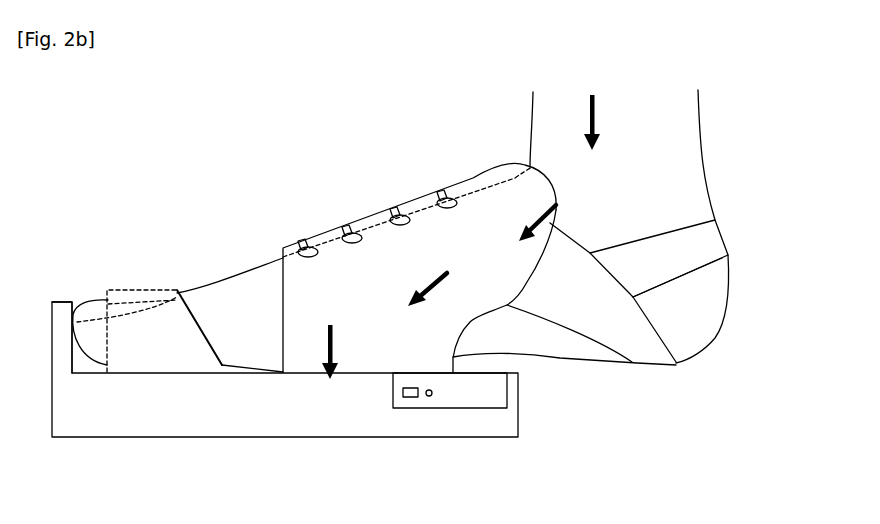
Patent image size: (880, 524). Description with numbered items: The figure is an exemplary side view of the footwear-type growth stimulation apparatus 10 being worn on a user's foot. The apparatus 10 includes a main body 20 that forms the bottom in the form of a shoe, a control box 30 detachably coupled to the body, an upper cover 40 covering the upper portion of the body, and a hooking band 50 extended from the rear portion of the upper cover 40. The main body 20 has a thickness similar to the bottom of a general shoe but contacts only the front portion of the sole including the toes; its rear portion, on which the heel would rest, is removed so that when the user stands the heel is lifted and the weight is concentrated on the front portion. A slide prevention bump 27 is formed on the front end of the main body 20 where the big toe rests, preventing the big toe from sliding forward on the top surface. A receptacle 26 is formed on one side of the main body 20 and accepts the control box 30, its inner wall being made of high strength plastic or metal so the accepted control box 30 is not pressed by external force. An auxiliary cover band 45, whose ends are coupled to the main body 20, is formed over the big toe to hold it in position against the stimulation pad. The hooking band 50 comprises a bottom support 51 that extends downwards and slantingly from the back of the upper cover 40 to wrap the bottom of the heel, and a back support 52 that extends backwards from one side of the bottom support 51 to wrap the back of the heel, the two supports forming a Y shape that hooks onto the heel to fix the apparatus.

The growth stimulation apparatus 10 is at (226, 159).
The main body 20 is at (170, 423).
The receptacle 26 is at (465, 408).
The slide prevention bump 27 is at (57, 323).
The control box 30 is at (440, 402).
The upper cover 40 is at (380, 243).
The auxiliary cover band 45 is at (155, 317).
The hooking band 50 is at (765, 415).
The bottom support 51 is at (637, 350).
The back support 52 is at (683, 258).